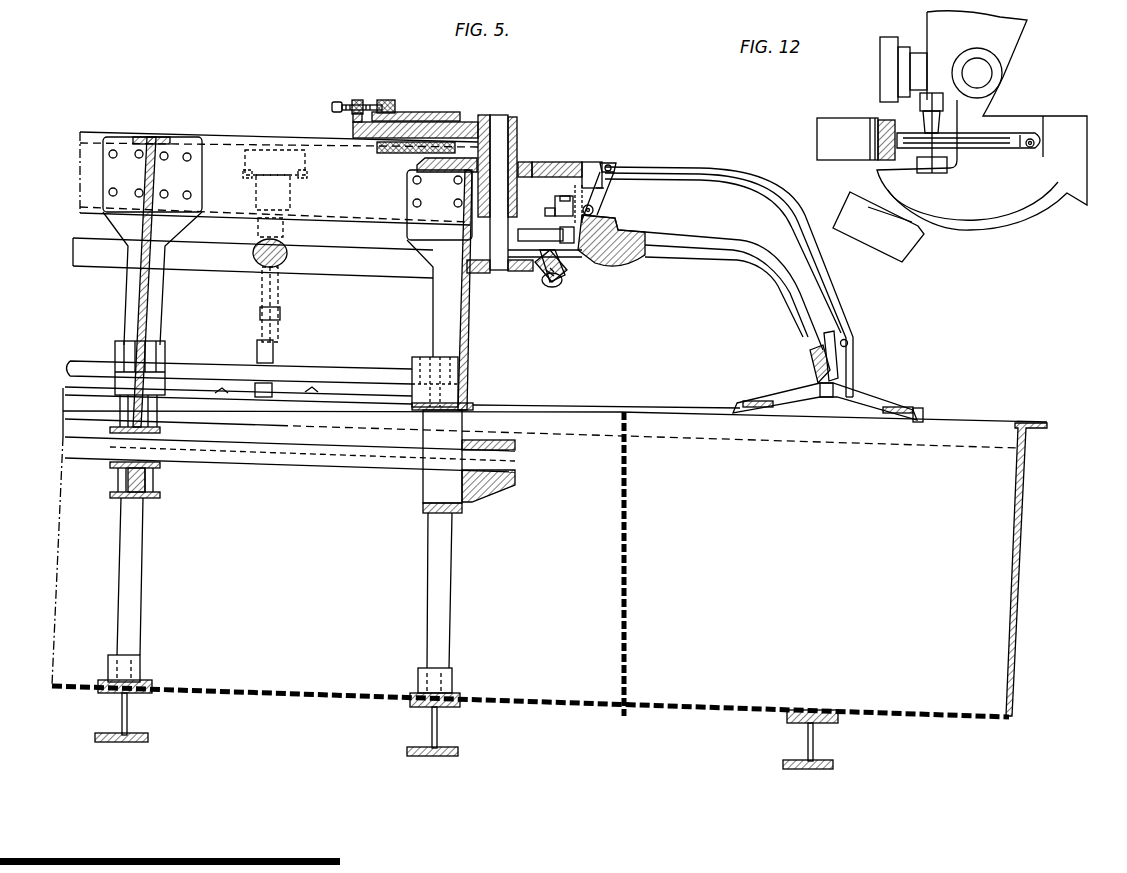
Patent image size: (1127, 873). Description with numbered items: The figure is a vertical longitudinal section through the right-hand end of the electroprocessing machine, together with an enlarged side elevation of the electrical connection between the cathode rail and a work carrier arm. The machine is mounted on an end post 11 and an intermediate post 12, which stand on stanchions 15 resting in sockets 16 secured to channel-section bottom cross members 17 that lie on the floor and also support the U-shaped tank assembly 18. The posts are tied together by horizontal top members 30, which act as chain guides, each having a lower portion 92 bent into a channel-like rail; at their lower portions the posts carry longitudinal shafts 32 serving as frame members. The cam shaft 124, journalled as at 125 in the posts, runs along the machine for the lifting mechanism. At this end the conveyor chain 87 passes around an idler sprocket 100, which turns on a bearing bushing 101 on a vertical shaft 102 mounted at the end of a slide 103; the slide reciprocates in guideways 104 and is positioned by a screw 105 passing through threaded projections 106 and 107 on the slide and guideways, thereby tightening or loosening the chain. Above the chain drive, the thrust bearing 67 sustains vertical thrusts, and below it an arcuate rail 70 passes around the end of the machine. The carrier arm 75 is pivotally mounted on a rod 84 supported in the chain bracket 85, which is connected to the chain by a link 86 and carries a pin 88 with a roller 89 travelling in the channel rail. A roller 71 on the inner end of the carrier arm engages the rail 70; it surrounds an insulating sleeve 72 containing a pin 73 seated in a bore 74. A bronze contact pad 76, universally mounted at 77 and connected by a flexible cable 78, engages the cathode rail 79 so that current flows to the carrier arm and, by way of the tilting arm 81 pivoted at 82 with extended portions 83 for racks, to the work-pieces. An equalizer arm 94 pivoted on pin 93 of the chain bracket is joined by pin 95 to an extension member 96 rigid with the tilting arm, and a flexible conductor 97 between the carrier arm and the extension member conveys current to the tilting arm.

In FIG. 5, the end post 11 is at (433, 314).
In FIG. 5, the intermediate post 12 is at (126, 300).
In FIG. 5, the stanchion 15 is at (120, 585).
In FIG. 5, the socket 16 is at (140, 668).
In FIG. 5, the bottom cross member 17 is at (140, 738).
In FIG. 5, the tank assembly 18 is at (277, 567).
In FIG. 5, the top member (chain guide) 30 is at (306, 150).
In FIG. 5, the longitudinal shaft 32 is at (380, 378).
In FIG. 5, the thrust bearing 67 is at (538, 196).
In FIG. 5, the arcuate rail 70 is at (516, 272).
In FIG. 5, the roller 71 is at (283, 250).
In FIG. 12, the roller 71 is at (845, 203).
In FIG. 5, the insulating sleeve 72 is at (558, 285).
In FIG. 5, the pin 73 is at (546, 280).
In FIG. 5, the bore 74 is at (550, 290).
In FIG. 5, the carrier arm 75 is at (740, 252).
In FIG. 12, the carrier arm 75 is at (1064, 135).
In FIG. 5, the contact pad 76 is at (596, 222).
In FIG. 12, the contact pad 76 is at (910, 130).
In FIG. 12, the universal mounting 77 is at (935, 133).
In FIG. 5, the flexible cable 78 is at (600, 266).
In FIG. 5, the cathode rail 79 is at (530, 232).
In FIG. 12, the cathode rail 79 is at (846, 125).
In FIG. 5, the tilting arm 81 is at (264, 398).
In FIG. 5, the pivot 82 is at (257, 356).
In FIG. 5, the extended portion 83 is at (312, 390).
In FIG. 5, the rod 84 is at (594, 208).
In FIG. 12, the rod 84 is at (985, 75).
In FIG. 5, the chain bracket 85 is at (617, 182).
In FIG. 12, the chain bracket 85 is at (1005, 41).
In FIG. 5, the link 86 is at (620, 193).
In FIG. 5, the conveyor chain 87 is at (590, 166).
In FIG. 5, the pin 88 is at (568, 198).
In FIG. 5, the roller 89 is at (554, 188).
In FIG. 12, the roller 89 is at (880, 77).
In FIG. 5, the lower portion 92 is at (360, 224).
In FIG. 5, the pin 93 is at (612, 168).
In FIG. 5, the equalizer arm 94 is at (278, 305).
In FIG. 5, the pin 95 is at (282, 314).
In FIG. 5, the extension member 96 is at (854, 357).
In FIG. 5, the flexible conductor 97 is at (832, 332).
In FIG. 5, the idler sprocket 100 is at (562, 162).
In FIG. 5, the bearing bushing 101 is at (530, 162).
In FIG. 5, the vertical shaft 102 is at (505, 125).
In FIG. 5, the slide 103 is at (466, 124).
In FIG. 5, the guideway 104 is at (434, 116).
In FIG. 5, the screw 105 is at (332, 106).
In FIG. 5, the threaded projection 106 is at (357, 100).
In FIG. 5, the threaded projection 107 is at (394, 98).
In FIG. 5, the cam shaft 124 is at (366, 462).
In FIG. 5, the journal 125 is at (160, 495).